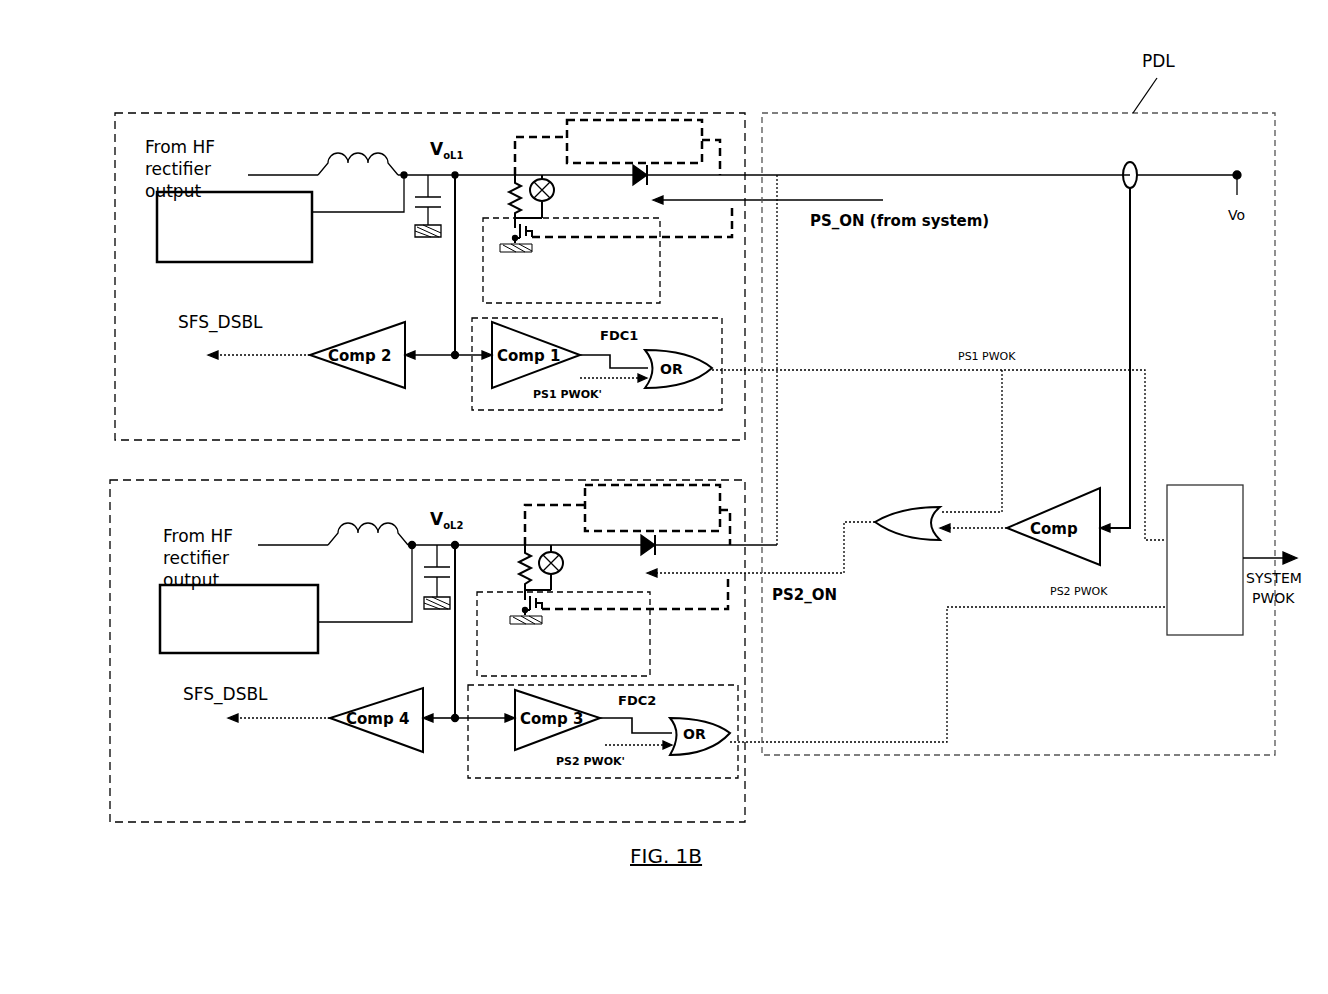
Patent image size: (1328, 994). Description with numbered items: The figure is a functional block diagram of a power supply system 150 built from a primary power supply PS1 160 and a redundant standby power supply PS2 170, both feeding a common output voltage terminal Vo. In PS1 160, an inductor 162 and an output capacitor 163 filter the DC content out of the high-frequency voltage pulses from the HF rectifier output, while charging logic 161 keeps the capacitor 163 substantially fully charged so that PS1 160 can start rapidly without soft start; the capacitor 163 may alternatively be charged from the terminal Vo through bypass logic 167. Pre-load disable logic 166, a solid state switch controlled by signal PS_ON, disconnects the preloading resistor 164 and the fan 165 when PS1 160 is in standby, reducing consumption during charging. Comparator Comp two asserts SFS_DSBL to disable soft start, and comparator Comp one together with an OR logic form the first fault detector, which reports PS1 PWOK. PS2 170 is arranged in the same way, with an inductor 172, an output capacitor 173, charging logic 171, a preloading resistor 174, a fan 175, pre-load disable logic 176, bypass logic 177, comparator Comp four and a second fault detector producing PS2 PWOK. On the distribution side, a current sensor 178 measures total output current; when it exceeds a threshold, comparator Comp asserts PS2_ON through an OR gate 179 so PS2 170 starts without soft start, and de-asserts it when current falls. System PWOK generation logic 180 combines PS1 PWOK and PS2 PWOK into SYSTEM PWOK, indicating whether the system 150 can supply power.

The power supply system 150 is at (1268, 72).
The power supply PS1 160 is at (335, 113).
The charging logic 161 is at (280, 218).
The inductor 162 is at (342, 165).
The output capacitor 163 is at (417, 208).
The preloading resistor 164 is at (511, 200).
The fan 165 is at (556, 190).
The pre-load disable logic 166 is at (607, 253).
The bypass logic 167 is at (617, 147).
The power supply PS2 170 is at (330, 823).
The charging logic 171 is at (286, 599).
The inductor 172 is at (352, 535).
The output capacitor 173 is at (428, 577).
The preloading resistor 174 is at (520, 572).
The fan 175 is at (565, 562).
The pre-load disable logic 176 is at (602, 626).
The bypass logic 177 is at (627, 515).
The current sensor 178 is at (1137, 164).
The OR gate 179 is at (922, 507).
The system PWOK generation logic 180 is at (1232, 560).